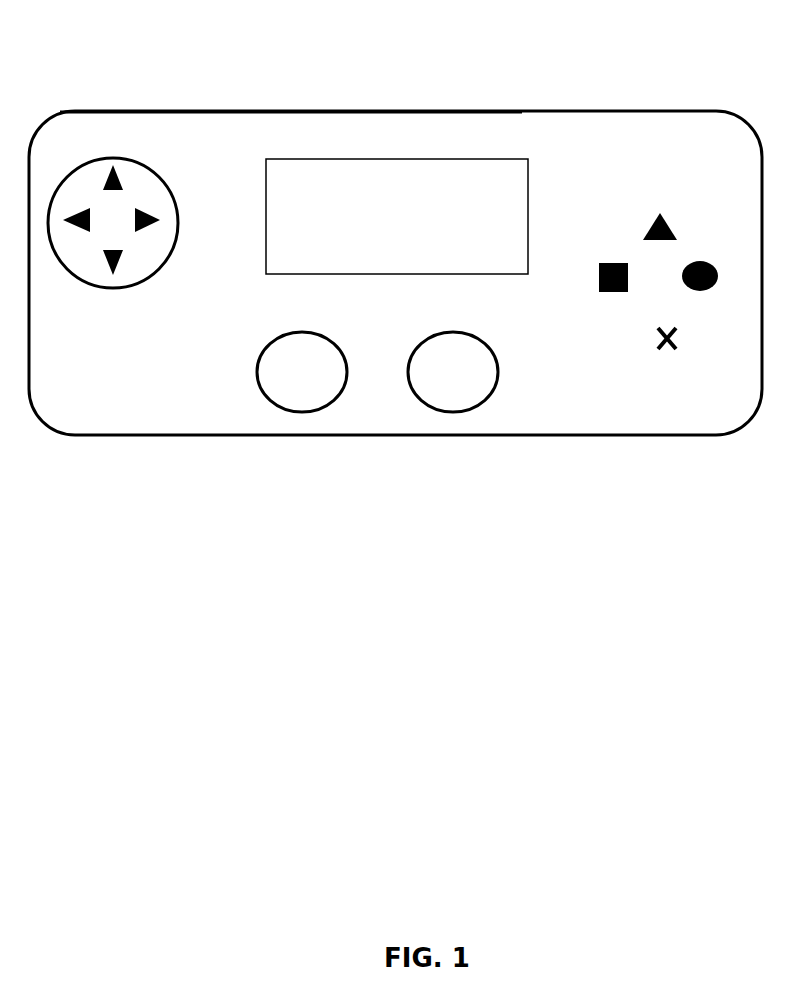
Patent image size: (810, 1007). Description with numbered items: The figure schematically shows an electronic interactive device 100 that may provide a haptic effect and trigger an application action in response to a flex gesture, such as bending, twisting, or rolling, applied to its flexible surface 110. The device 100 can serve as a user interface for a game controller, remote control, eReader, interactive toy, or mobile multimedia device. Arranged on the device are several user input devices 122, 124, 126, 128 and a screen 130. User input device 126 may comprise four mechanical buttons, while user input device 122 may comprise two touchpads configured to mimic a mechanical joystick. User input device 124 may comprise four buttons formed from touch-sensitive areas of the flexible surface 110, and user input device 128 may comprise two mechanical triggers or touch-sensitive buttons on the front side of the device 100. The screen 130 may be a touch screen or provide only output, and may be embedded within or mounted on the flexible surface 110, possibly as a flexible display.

The electronic interactive device 100 is at (672, 110).
The flexible surface 110 is at (162, 128).
The user input device 122 is at (447, 373).
The user input device 124 is at (657, 348).
The user input device 126 is at (101, 267).
The user input device 128 is at (522, 110).
The screen 130 is at (483, 235).